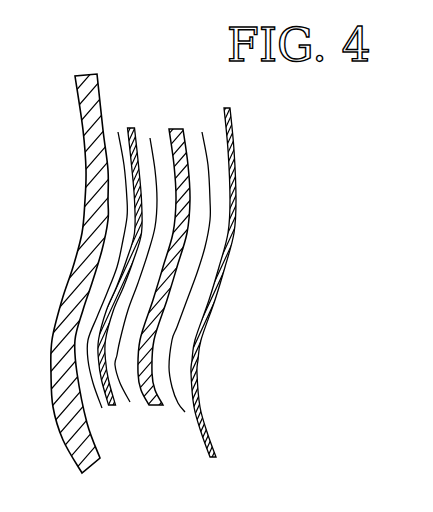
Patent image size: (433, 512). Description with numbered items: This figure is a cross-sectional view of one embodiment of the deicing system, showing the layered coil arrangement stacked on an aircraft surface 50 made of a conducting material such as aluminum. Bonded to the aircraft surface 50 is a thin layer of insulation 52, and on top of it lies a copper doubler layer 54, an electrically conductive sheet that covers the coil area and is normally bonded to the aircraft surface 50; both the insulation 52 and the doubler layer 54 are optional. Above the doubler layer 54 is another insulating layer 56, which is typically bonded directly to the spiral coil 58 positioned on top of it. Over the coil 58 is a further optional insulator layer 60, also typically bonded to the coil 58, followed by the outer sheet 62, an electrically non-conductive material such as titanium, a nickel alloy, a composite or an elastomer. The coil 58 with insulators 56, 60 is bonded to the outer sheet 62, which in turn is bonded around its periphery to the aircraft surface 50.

The aircraft surface 50 is at (88, 168).
The insulation layer 52 is at (118, 132).
The copper doubler layer 54 is at (115, 407).
The insulating layer 56 is at (150, 142).
The spiral coil 58 is at (162, 406).
The insulator layer 60 is at (207, 145).
The outer sheet 62 is at (197, 372).